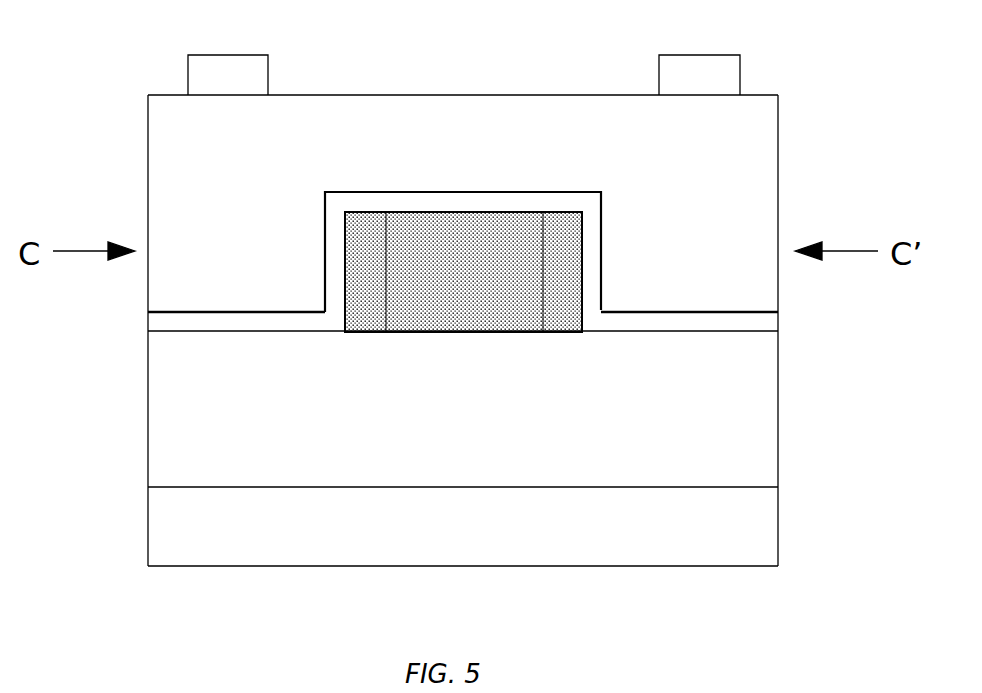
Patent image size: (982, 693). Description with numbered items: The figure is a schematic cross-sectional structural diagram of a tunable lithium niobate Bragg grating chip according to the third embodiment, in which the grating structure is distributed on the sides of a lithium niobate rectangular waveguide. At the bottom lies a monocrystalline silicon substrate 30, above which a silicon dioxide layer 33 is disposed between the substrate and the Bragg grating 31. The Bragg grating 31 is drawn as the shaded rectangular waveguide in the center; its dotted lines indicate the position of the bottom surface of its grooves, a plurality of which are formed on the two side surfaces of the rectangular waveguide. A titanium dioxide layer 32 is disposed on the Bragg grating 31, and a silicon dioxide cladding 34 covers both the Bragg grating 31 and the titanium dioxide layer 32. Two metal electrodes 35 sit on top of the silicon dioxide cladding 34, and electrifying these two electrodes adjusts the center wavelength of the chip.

The monocrystalline silicon substrate 30 is at (247, 526).
The Bragg grating 31 is at (522, 251).
The titanium dioxide layer 32 is at (715, 320).
The silicon dioxide layer 33 is at (228, 428).
The silicon dioxide cladding 34 is at (228, 252).
The metal electrode 35 is at (218, 84).